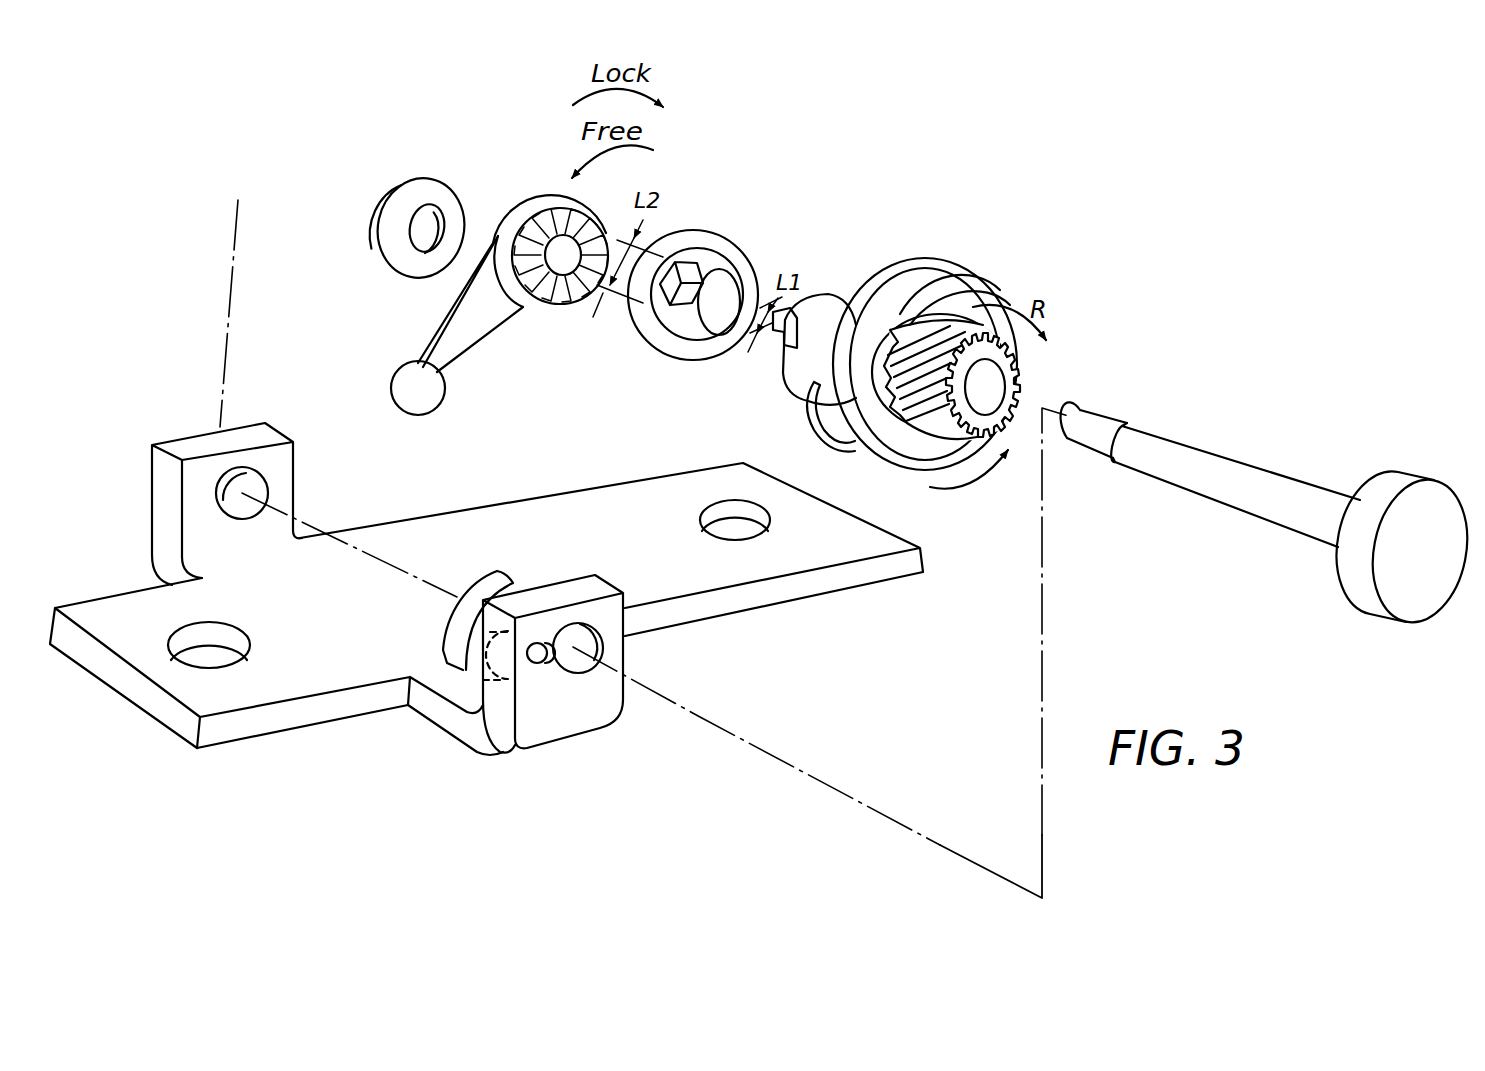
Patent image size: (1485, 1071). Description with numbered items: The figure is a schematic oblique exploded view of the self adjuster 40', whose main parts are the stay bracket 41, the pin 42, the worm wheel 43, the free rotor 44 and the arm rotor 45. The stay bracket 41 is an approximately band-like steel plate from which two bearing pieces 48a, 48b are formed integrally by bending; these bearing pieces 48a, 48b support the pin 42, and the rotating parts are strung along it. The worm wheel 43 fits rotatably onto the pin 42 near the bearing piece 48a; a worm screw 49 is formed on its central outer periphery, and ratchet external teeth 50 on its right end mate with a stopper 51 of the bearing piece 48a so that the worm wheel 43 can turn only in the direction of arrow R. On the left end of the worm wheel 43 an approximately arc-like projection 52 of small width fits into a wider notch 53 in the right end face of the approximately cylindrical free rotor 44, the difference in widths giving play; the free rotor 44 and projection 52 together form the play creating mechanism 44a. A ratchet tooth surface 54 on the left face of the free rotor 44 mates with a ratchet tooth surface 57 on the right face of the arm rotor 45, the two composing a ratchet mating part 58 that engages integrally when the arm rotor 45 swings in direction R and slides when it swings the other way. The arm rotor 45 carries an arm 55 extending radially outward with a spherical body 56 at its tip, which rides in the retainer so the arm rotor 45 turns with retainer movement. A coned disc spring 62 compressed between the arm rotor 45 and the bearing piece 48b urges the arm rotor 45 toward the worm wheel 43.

The self adjuster 40' is at (981, 141).
The stay bracket 41 is at (311, 735).
The pin 42 is at (1258, 475).
The worm wheel 43 is at (963, 258).
The free rotor 44 is at (722, 232).
The play creating mechanism 44a is at (772, 263).
The arm rotor 45 is at (490, 337).
The bearing piece 48a is at (613, 655).
The bearing piece 48b is at (185, 447).
The worm screw 49 is at (980, 283).
The ratchet external teeth 50 is at (1030, 385).
The stopper 51 is at (490, 583).
The projection 52 is at (788, 316).
The notch 53 is at (681, 308).
The ratchet tooth surface 54 is at (670, 235).
The arm 55 is at (440, 307).
The spherical body 56 is at (403, 390).
The ratchet tooth surface 57 is at (593, 223).
The ratchet mating part 58 is at (717, 157).
The coned disc spring 62 is at (415, 190).